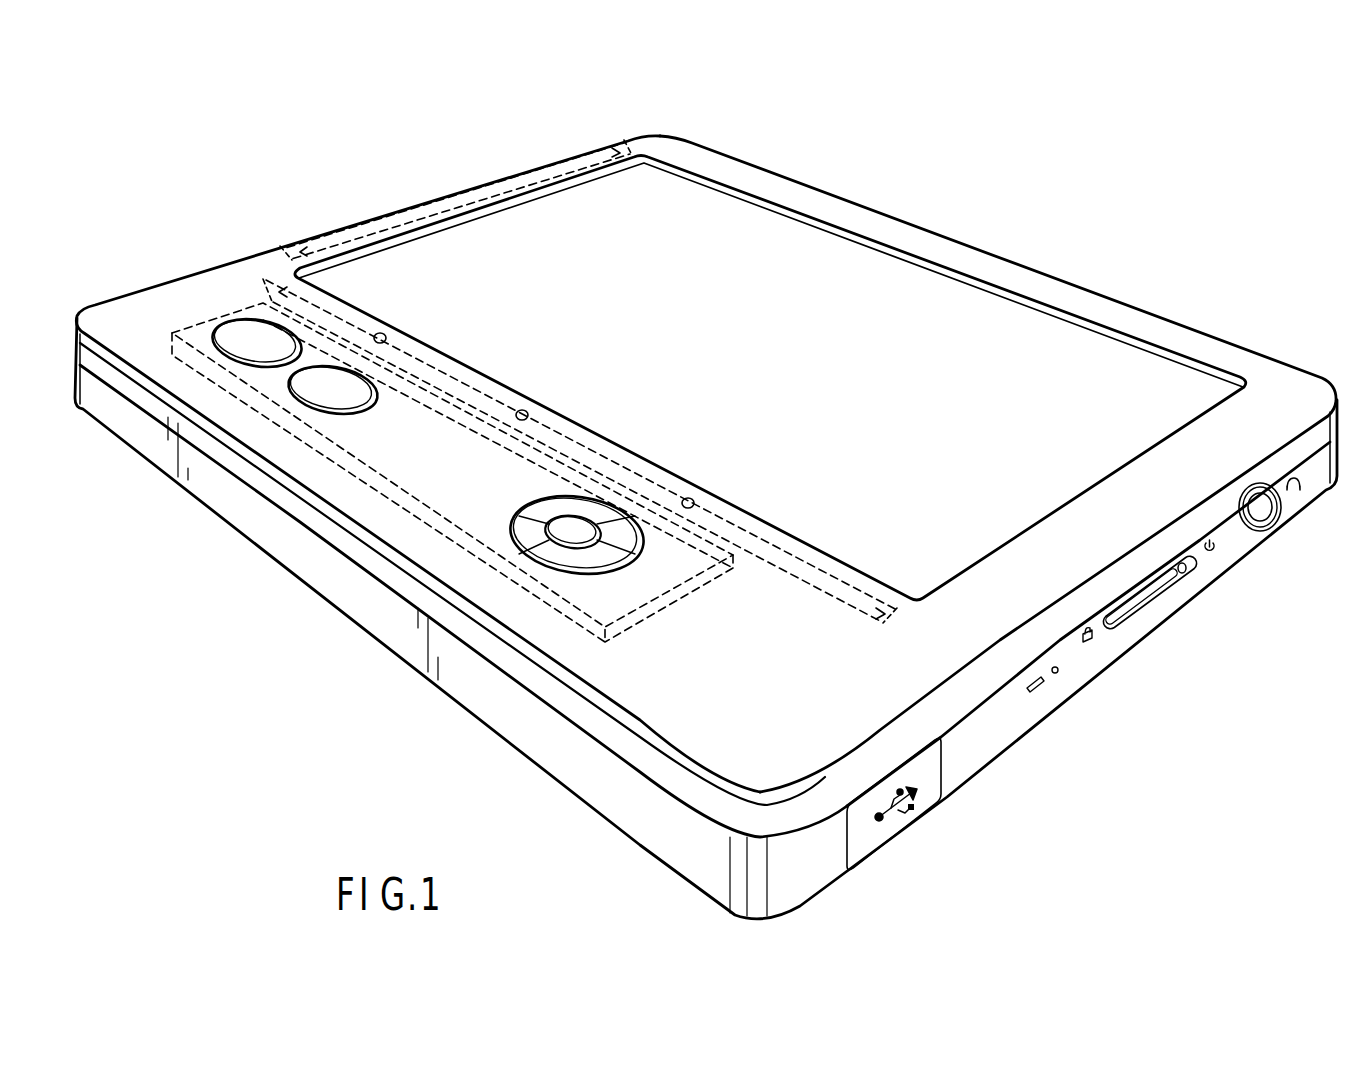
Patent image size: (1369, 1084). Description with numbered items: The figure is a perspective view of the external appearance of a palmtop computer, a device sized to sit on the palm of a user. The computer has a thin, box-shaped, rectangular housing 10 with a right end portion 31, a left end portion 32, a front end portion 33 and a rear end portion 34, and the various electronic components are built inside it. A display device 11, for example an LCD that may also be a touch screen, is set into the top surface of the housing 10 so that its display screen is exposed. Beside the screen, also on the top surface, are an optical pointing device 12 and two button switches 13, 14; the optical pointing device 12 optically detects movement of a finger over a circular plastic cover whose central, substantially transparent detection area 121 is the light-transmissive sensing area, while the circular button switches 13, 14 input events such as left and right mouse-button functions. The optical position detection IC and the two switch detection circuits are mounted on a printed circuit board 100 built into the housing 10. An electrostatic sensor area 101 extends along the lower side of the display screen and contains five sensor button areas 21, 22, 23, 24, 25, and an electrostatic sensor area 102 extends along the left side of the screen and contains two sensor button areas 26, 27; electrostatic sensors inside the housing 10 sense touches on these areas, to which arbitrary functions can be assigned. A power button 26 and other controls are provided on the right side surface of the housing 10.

The housing 10 is at (990, 740).
The display device 11 is at (1098, 370).
The optical pointing device 12 is at (540, 500).
The detection area 121 is at (587, 536).
The button switch 13 is at (358, 399).
The button switch 14 is at (240, 340).
The sensor button area 21 is at (882, 622).
The sensor button area 22 is at (696, 500).
The sensor button area 23 is at (530, 413).
The sensor button area 24 is at (387, 339).
The sensor button area 25 is at (297, 289).
The sensor button area / power button 26 is at (1180, 575).
The sensor button area 27 is at (306, 250).
The right end portion 31 is at (1023, 631).
The left end portion 32 is at (176, 277).
The front end portion 33 is at (367, 543).
The rear end portion 34 is at (958, 243).
The printed circuit board 100 is at (640, 617).
The electrostatic sensor area 101 is at (835, 600).
The electrostatic sensor area 102 is at (288, 246).